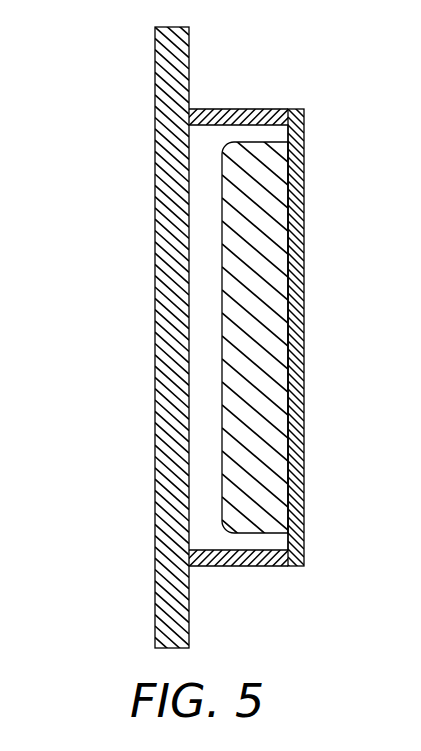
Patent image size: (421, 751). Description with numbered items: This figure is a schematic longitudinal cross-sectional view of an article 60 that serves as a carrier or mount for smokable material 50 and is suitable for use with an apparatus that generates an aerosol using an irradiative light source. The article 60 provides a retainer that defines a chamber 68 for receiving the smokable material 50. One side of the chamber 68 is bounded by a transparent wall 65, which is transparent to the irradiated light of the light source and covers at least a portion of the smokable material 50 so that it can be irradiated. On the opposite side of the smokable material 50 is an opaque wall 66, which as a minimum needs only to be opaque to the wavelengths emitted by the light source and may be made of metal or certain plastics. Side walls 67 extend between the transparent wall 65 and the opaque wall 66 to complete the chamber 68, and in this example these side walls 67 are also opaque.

The article 60 is at (196, 336).
The transparent wall 65 is at (155, 113).
The opaque wall 66 is at (300, 347).
The side walls 67 is at (247, 108).
The chamber 68 is at (200, 447).
The smokable material 50 is at (283, 272).